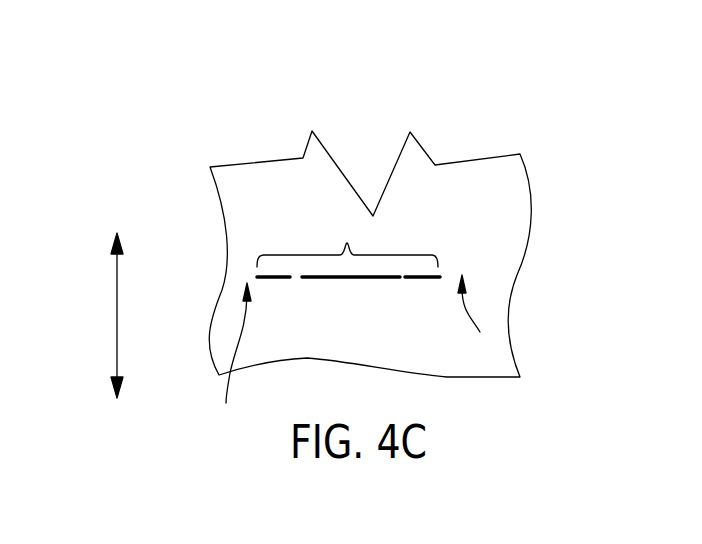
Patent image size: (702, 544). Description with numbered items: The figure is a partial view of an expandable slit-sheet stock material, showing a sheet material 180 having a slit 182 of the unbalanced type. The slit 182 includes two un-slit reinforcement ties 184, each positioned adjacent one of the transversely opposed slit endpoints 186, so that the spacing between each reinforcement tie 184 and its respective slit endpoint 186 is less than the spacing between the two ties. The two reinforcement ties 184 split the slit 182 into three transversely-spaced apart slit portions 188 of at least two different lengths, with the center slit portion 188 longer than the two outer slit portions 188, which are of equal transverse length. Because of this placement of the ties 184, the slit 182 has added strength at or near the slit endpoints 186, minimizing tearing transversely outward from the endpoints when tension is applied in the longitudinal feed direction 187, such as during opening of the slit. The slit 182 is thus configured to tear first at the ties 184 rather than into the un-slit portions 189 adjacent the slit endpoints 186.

The sheet material 180 is at (498, 132).
The slit 182 is at (347, 237).
The reinforcement ties 184 is at (296, 280).
The slit endpoints 186 is at (257, 276).
The longitudinal feed direction 187 is at (116, 316).
The slit portions 188 is at (277, 282).
The un-slit portions 189 is at (352, 358).